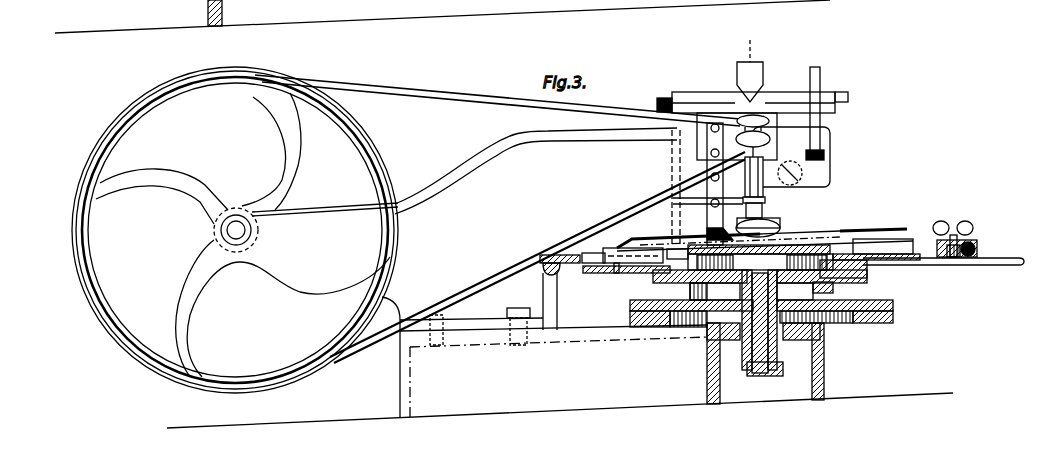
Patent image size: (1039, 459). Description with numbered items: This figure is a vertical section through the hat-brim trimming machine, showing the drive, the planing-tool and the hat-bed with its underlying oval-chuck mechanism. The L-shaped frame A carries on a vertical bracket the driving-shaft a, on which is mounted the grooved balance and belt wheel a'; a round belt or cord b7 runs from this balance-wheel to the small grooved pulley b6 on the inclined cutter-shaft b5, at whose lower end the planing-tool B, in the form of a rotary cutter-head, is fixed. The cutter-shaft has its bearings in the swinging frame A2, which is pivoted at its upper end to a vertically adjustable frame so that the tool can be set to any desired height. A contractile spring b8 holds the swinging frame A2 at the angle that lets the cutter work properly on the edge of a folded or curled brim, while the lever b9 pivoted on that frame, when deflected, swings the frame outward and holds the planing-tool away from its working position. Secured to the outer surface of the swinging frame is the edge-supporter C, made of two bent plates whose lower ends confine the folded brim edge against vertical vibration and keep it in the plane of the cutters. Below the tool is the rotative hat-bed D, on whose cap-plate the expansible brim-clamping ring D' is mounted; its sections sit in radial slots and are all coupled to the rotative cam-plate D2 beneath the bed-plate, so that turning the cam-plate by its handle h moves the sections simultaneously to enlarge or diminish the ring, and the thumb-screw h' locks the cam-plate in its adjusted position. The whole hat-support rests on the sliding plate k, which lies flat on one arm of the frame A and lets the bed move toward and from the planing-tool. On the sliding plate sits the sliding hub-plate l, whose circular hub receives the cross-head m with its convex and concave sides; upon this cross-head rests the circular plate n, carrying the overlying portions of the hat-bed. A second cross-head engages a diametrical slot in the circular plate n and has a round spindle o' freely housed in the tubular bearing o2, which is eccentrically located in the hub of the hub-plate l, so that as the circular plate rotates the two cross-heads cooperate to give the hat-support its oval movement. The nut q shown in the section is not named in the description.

The driving-shaft a is at (236, 230).
The grooved balance and belt wheel a' is at (235, 230).
The round belt or cord b7 is at (501, 219).
The small grooved pulley b6 is at (737, 138).
The inclined shaft b5 is at (766, 198).
The contractile spring b8 is at (822, 178).
The lever b9 is at (815, 104).
The frame A is at (603, 272).
The swinging frame A2 is at (800, 151).
The planing-tool B is at (762, 223).
The edge-supporter C is at (702, 184).
The rotative hat-bed D is at (762, 250).
The expansible brim-clamping ring D' is at (754, 249).
The rotative cam-plate D2 is at (751, 265).
The handle h is at (943, 252).
The thumb-screw h' is at (956, 232).
The nut q is at (760, 262).
The circular plate n is at (807, 262).
The cross-head m is at (848, 290).
The sliding hub-plate l is at (757, 294).
The sliding plate k is at (868, 314).
The tubular bearing o2 is at (749, 321).
The round spindle or stem o' is at (765, 378).